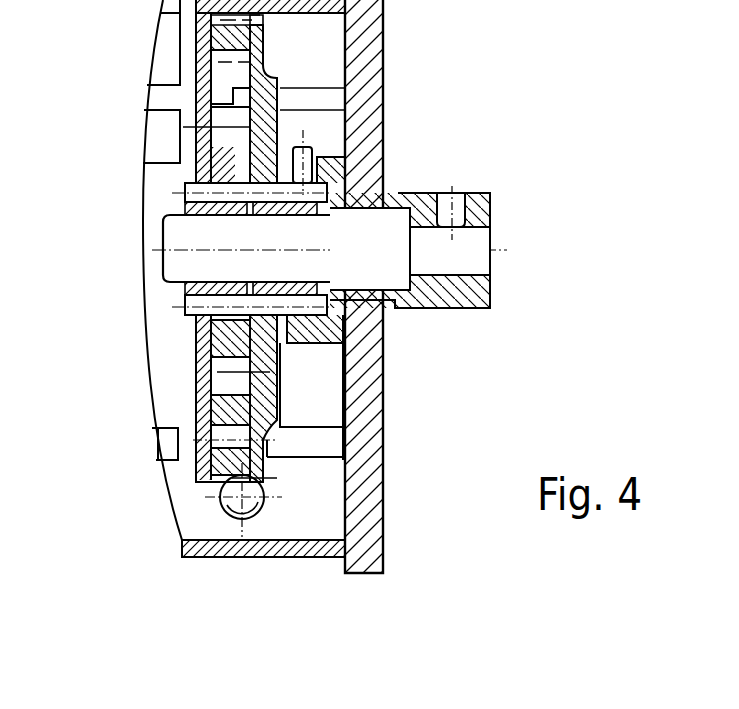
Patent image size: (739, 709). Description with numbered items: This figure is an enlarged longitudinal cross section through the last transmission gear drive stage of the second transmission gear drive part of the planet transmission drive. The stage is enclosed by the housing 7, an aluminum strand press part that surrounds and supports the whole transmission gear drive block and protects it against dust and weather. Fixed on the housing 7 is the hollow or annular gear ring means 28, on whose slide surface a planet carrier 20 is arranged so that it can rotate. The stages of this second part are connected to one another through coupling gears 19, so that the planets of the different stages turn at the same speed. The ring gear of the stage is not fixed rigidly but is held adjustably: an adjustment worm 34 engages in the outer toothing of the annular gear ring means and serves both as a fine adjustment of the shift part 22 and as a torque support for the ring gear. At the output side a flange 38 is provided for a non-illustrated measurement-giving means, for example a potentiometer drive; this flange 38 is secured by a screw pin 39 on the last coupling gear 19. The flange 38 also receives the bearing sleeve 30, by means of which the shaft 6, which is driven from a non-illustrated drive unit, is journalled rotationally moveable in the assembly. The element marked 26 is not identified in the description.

The shaft 6 is at (200, 255).
The housing 7 is at (272, 547).
The coupling gear 19 is at (180, 205).
The planet carrier 20 is at (277, 140).
The shift part 22 is at (212, 24).
The ring 26 is at (267, 62).
The annular gear ring means 28 is at (376, 66).
The bearing sleeve 30 is at (402, 192).
The adjustment worm 34 is at (233, 500).
The flange 38 is at (475, 290).
The screw pin 39 is at (316, 152).